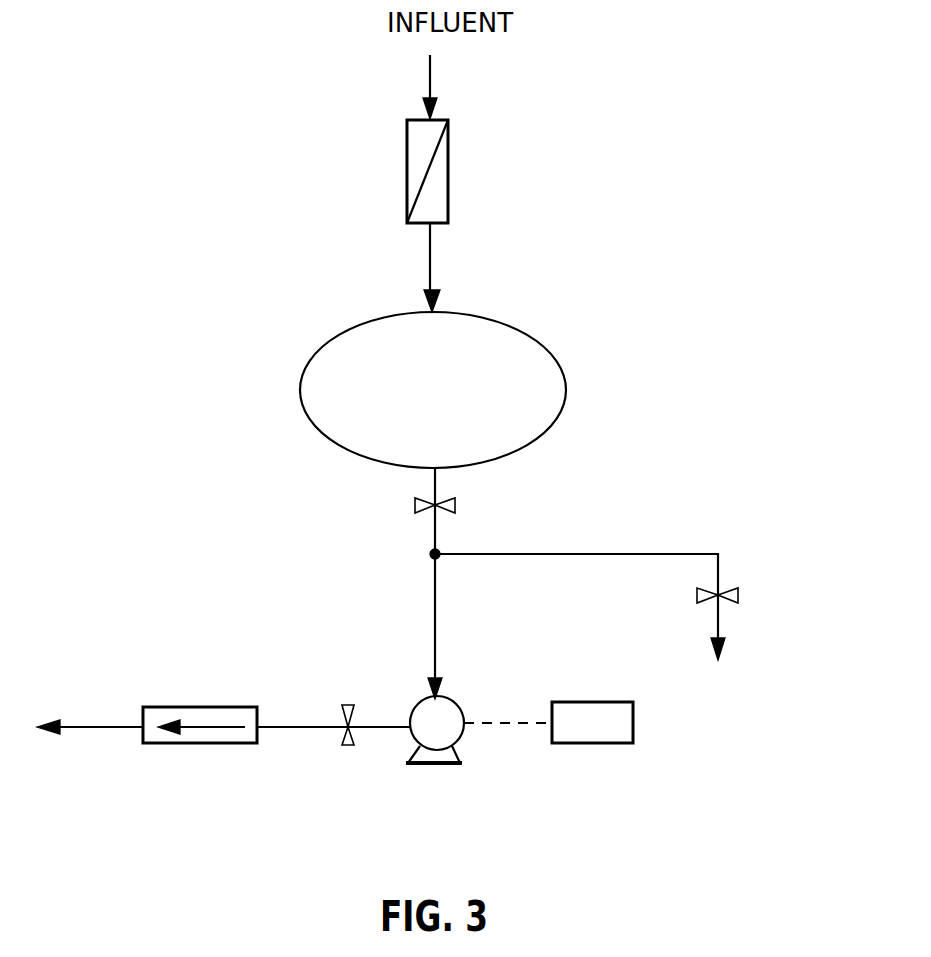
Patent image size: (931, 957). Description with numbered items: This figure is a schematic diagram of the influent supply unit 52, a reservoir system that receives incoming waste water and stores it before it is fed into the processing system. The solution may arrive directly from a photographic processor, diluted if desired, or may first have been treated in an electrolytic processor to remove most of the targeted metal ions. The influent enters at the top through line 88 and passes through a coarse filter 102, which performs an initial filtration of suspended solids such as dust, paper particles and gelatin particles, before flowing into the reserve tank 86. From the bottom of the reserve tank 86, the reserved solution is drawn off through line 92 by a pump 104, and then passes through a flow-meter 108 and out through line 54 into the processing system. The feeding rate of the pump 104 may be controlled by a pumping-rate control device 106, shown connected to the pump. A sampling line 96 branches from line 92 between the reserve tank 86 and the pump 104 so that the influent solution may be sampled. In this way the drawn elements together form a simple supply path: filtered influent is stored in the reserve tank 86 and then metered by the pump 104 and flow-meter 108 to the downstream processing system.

The influent supply unit 52 is at (225, 328).
The line 54 is at (120, 730).
The reserve tank 86 is at (522, 446).
The line 88 is at (434, 92).
The line 92 is at (435, 597).
The sampling line 96 is at (632, 551).
The coarse filter 102 is at (448, 188).
The pump 104 is at (460, 758).
The pumping-rate control device 106 is at (605, 743).
The flow-meter 108 is at (205, 745).